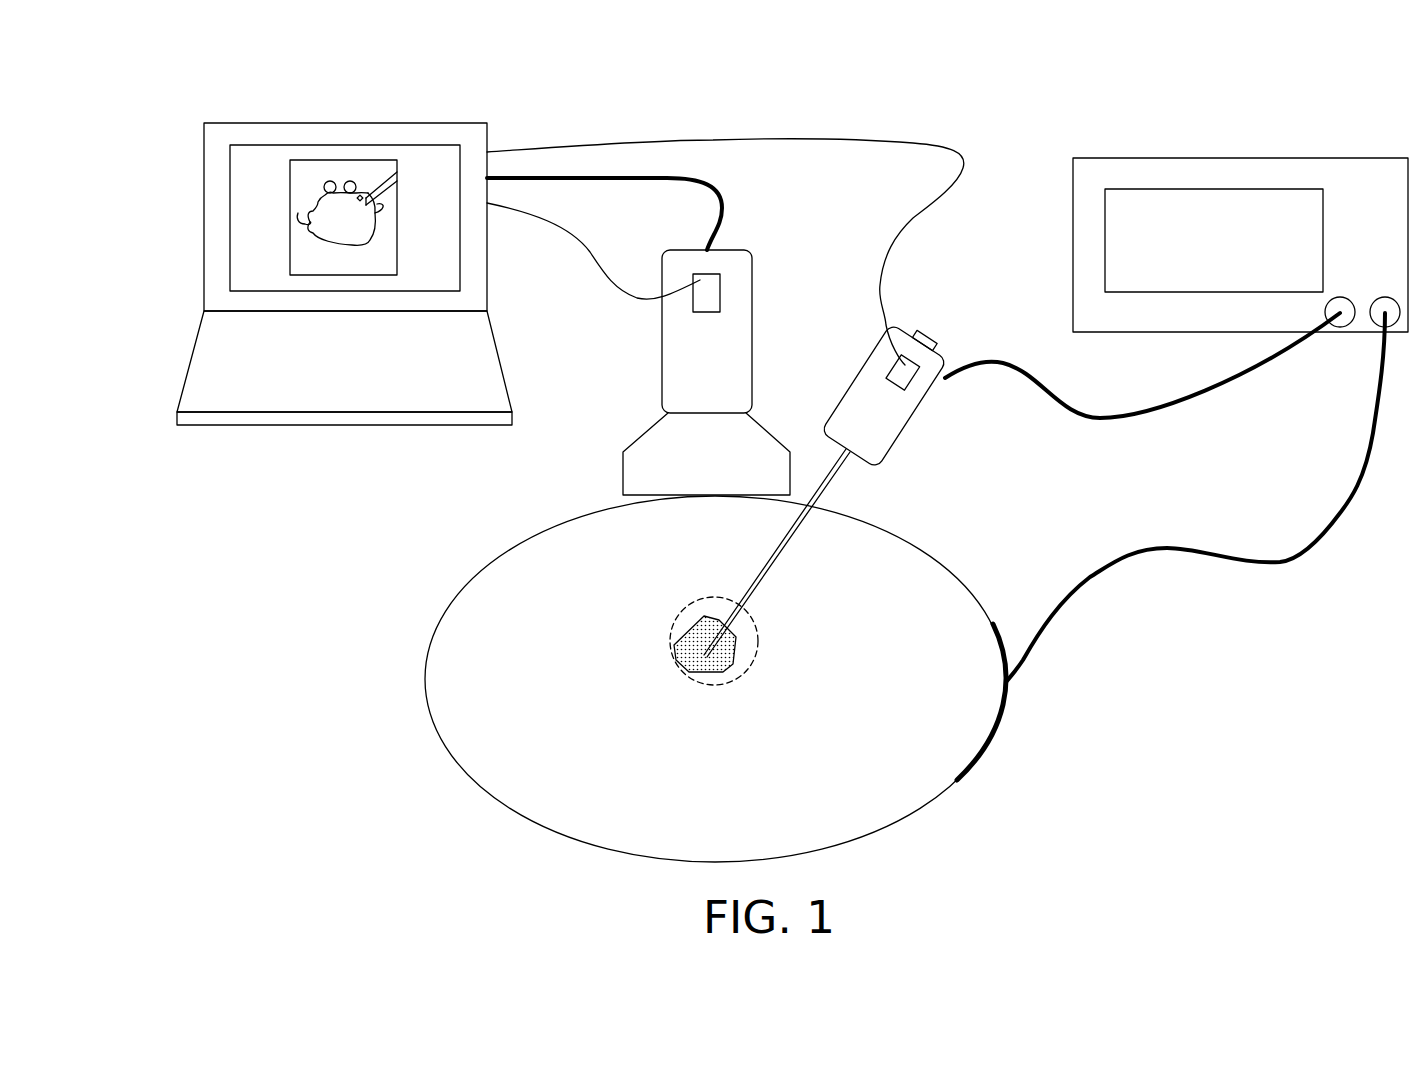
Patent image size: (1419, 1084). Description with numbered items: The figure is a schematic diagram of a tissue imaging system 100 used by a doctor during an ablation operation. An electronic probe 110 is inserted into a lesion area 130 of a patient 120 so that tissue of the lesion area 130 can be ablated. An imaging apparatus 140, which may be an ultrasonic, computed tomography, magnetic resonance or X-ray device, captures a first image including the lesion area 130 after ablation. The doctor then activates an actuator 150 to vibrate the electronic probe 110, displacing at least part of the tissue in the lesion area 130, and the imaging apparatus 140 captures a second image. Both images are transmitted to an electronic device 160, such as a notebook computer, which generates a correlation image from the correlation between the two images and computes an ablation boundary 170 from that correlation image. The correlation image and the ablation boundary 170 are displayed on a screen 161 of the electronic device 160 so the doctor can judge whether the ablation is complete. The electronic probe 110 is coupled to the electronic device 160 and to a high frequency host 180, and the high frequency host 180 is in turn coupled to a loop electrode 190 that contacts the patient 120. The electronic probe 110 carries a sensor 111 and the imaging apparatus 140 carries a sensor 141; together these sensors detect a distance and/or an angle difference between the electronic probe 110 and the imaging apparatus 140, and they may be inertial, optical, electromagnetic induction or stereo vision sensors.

The tissue imaging system 100 is at (1393, 884).
The electronic probe 110 is at (792, 544).
The sensor 111 is at (908, 377).
The patient 120 is at (907, 820).
The lesion area 130 is at (735, 649).
The imaging apparatus 140 is at (637, 437).
The sensor 141 is at (710, 285).
The actuator 150 is at (930, 342).
The electronic device 160 is at (190, 360).
The screen 161 is at (253, 182).
The ablation boundary 170 is at (680, 684).
The high frequency host 180 is at (1332, 158).
The loop electrode 190 is at (1007, 702).